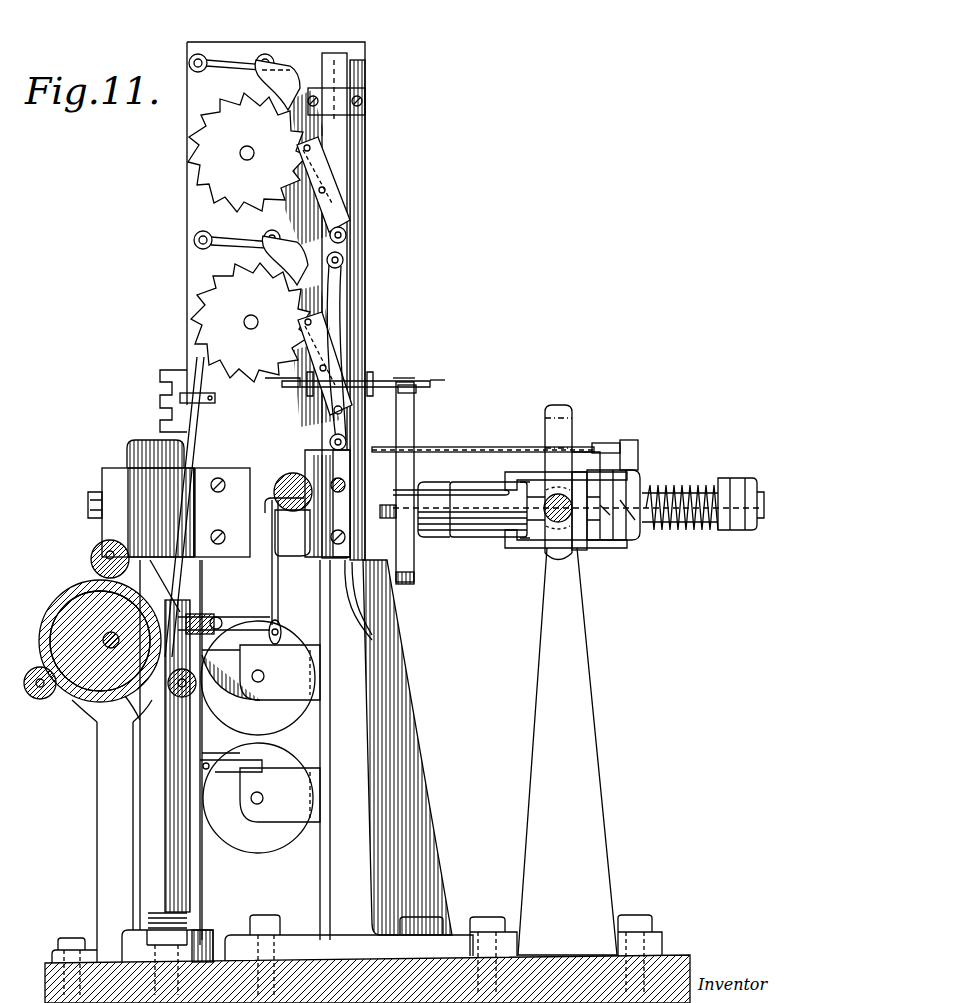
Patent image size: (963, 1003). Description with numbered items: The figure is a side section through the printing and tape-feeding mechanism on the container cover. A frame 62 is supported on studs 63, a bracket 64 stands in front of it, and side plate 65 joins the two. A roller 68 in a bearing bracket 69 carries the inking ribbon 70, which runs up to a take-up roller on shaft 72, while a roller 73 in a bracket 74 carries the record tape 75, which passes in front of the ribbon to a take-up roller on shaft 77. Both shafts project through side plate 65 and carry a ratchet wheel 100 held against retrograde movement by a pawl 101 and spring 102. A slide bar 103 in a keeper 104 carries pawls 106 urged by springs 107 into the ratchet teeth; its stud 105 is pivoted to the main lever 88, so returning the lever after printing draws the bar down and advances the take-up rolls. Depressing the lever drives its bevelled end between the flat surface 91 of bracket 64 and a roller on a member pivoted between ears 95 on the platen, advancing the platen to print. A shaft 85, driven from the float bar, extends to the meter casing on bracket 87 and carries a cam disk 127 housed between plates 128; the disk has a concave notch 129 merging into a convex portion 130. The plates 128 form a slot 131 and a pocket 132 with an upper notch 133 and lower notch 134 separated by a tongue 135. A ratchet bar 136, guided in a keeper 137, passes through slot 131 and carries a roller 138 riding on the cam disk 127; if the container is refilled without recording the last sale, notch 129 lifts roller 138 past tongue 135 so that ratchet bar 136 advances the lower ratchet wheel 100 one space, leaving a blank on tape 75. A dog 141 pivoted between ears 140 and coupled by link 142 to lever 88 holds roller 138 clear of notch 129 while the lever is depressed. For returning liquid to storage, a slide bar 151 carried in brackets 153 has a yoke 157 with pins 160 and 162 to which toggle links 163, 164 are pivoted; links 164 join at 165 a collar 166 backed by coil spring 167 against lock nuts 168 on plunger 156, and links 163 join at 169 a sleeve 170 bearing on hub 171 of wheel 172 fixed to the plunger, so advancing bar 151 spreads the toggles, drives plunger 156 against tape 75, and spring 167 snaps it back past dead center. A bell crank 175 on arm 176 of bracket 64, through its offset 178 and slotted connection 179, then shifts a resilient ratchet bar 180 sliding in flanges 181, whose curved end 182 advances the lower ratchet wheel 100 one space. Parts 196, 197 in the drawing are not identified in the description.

The frame 62 is at (112, 474).
The studs 63 is at (155, 840).
The bracket 64 is at (400, 722).
The side plate 65 is at (187, 268).
The roller 68 is at (265, 850).
The bearing bracket 69 is at (302, 800).
The inking ribbon 70 is at (235, 768).
The shaft 72 is at (254, 150).
The roller 73 is at (270, 712).
The bracket 74 is at (302, 672).
The record tape 75 is at (206, 570).
The shaft 77 is at (258, 319).
The shaft 85 is at (104, 632).
The bracket 87 is at (105, 900).
The main lever 88 is at (288, 478).
The flat surface 91 is at (310, 464).
The ears 95 is at (248, 482).
The ratchet wheel 100 is at (196, 148).
The pawl 101 is at (283, 72).
The spring 102 is at (238, 64).
The slide bar 103 is at (340, 142).
The keeper 104 is at (340, 108).
The stud 105 is at (355, 575).
The pawls 106 is at (330, 200).
The springs 107 is at (330, 222).
The cam disk 127 is at (62, 632).
The plates 128 is at (78, 706).
The concave notch 129 is at (128, 708).
The convex portion 130 is at (100, 560).
The slot 131 is at (185, 545).
The pocket 132 is at (156, 728).
The upper notch 133 is at (165, 612).
The lower notch 134 is at (222, 680).
The tongue 135 is at (200, 624).
The ratchet bar 136 is at (190, 510).
The keeper 137 is at (182, 400).
The roller 138 is at (150, 600).
The ears 140 is at (262, 656).
The dog 141 is at (278, 630).
The link 142 is at (278, 578).
The slide bar 151 is at (600, 548).
The brackets 153 is at (572, 720).
The plunger 156 is at (592, 502).
The yoke 157 is at (572, 415).
The pin 160 is at (557, 405).
The pin 162 is at (557, 566).
The links 163 is at (525, 470).
The links 164 is at (583, 465).
The pivot connection 165 is at (608, 552).
The collar 166 is at (640, 540).
The expansile coil spring 167 is at (690, 525).
The lock nuts 168 is at (745, 480).
The pivot connection 169 is at (525, 480).
The sleeve 170 is at (478, 552).
The hub 171 is at (433, 546).
The wheel 172 is at (412, 570).
The bell crank 175 is at (438, 492).
The arm 176 is at (372, 628).
The upward offset 178 is at (416, 386).
The slotted connection 179 is at (440, 380).
The ratchet bar 180 is at (410, 378).
The flanges 181 is at (383, 380).
The inner end 182 is at (270, 384).
The bracket 196 is at (626, 442).
The bar 197 is at (456, 438).